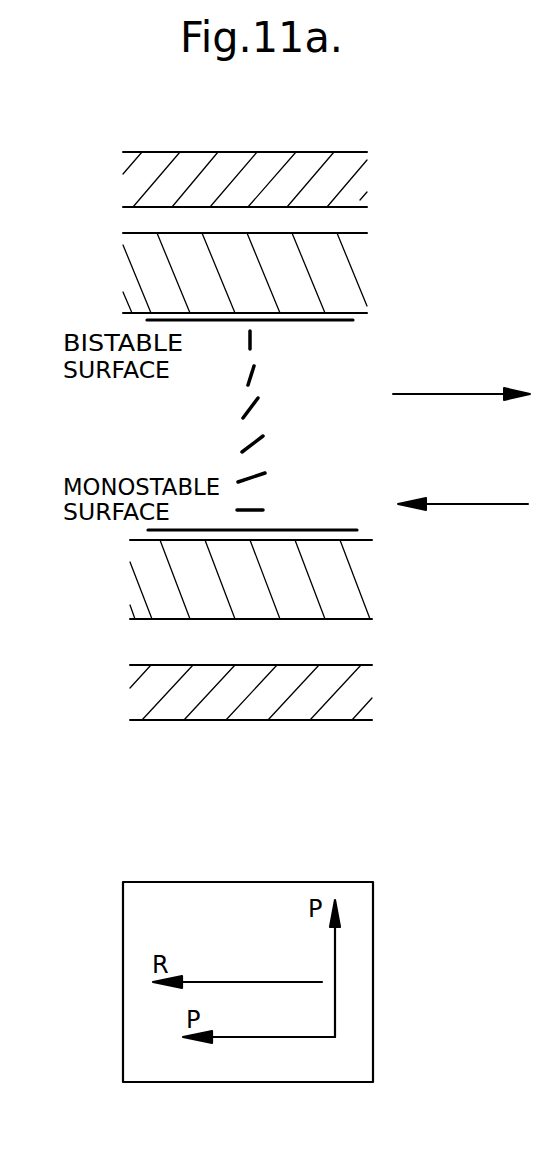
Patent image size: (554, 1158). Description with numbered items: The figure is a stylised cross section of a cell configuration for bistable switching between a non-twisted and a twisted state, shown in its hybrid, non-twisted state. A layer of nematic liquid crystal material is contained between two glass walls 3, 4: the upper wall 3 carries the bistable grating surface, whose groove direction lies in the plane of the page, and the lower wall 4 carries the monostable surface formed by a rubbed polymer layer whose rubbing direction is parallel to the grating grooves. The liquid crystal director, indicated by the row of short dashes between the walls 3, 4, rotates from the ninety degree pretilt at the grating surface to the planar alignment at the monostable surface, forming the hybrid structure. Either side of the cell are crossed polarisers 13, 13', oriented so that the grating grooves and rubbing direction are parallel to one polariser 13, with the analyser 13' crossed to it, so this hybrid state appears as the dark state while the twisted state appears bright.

The polariser 13 is at (272, 158).
The glass wall 3 is at (347, 263).
The glass wall 4 is at (347, 578).
The polariser 13' is at (289, 717).